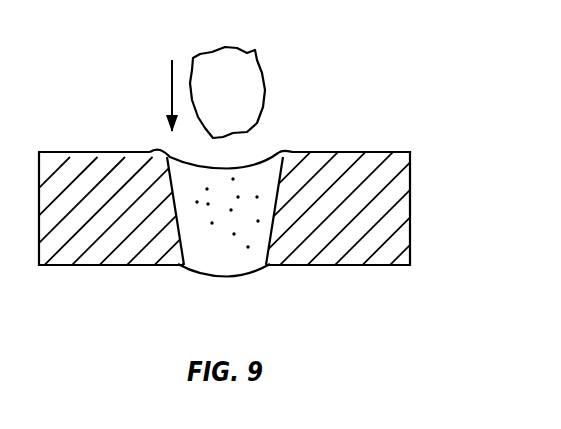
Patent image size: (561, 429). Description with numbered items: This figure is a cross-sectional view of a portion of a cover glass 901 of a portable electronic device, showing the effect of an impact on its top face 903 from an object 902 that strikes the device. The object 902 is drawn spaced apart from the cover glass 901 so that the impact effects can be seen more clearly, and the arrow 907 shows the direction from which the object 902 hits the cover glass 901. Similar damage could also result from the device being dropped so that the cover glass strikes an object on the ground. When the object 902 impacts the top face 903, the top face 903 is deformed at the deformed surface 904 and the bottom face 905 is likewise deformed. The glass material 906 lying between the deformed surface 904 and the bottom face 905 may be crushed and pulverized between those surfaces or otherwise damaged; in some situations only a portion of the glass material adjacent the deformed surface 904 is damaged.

The cover glass 901 is at (400, 188).
The object 902 is at (212, 52).
The top face 903 is at (380, 151).
The deformed surface of top face 904 is at (266, 147).
The bottom face 905 is at (202, 281).
The glass material 906 is at (250, 228).
The arrow 907 is at (172, 87).